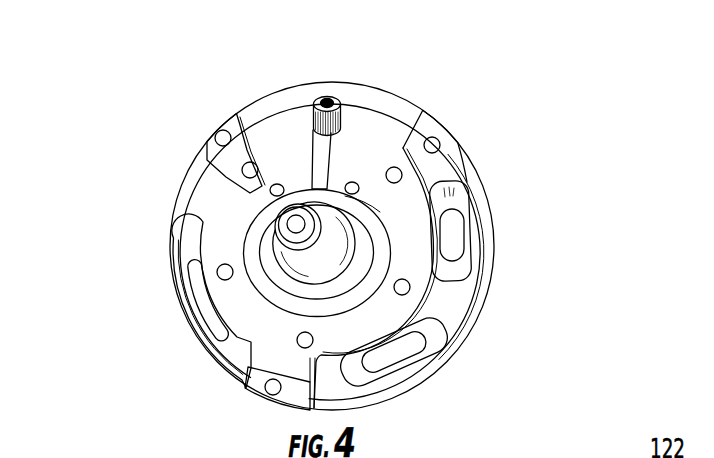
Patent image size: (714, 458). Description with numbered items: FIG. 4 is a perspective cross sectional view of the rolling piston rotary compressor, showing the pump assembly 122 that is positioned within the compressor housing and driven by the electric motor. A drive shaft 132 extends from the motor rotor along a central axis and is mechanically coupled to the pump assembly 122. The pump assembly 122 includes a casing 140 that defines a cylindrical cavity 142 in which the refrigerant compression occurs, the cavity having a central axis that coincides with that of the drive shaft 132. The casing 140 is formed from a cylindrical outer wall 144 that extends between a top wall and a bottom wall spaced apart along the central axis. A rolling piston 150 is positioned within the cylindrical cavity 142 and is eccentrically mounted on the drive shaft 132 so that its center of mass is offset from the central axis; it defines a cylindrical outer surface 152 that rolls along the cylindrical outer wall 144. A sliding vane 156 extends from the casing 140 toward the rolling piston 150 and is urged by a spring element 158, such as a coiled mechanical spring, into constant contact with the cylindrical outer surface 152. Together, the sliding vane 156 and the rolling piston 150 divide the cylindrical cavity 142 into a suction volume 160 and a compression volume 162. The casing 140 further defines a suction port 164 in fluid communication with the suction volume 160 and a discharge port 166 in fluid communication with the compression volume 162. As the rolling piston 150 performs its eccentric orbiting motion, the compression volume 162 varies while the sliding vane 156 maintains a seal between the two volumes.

The pump assembly 122 is at (478, 73).
The drive shaft 132 is at (296, 226).
The casing 140 is at (414, 242).
The cylindrical cavity 142 is at (382, 221).
The cylindrical outer wall 144 is at (394, 265).
The rolling piston 150 is at (295, 296).
The cylindrical outer surface 152 is at (338, 186).
The sliding vane 156 is at (322, 157).
The spring element 158 is at (326, 96).
The suction volume 160 is at (368, 193).
The compression volume 162 is at (255, 200).
The suction port 164 is at (372, 193).
The discharge port 166 is at (276, 182).